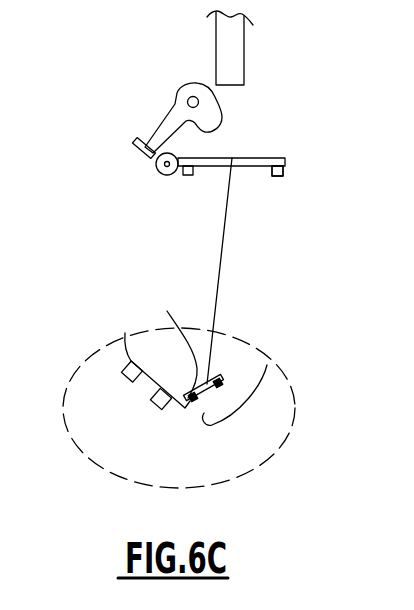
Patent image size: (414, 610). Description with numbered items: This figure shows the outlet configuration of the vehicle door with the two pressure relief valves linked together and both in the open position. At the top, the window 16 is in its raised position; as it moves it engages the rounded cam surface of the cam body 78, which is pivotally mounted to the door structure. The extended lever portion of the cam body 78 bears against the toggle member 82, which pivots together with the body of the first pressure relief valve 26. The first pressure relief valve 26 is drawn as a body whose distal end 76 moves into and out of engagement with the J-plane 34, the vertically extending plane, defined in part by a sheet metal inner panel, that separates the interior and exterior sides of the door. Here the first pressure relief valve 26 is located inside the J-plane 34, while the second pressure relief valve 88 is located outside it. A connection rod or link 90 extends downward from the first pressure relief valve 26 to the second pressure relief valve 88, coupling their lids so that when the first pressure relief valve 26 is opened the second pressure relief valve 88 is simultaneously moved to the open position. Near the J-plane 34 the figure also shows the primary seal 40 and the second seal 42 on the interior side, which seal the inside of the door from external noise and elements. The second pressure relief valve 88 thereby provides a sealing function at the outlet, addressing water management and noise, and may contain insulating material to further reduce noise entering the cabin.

The window 16 is at (233, 52).
The cam body 78 is at (182, 88).
The toggle member 82 is at (145, 156).
The first pressure relief valve 26 is at (262, 158).
The distal end 76 is at (285, 162).
The connection rod/link 90 is at (226, 225).
The J-plane 34 is at (167, 311).
The second pressure relief valve 88 is at (220, 376).
The second seal 42 is at (121, 377).
The primary seal 40 is at (153, 405).